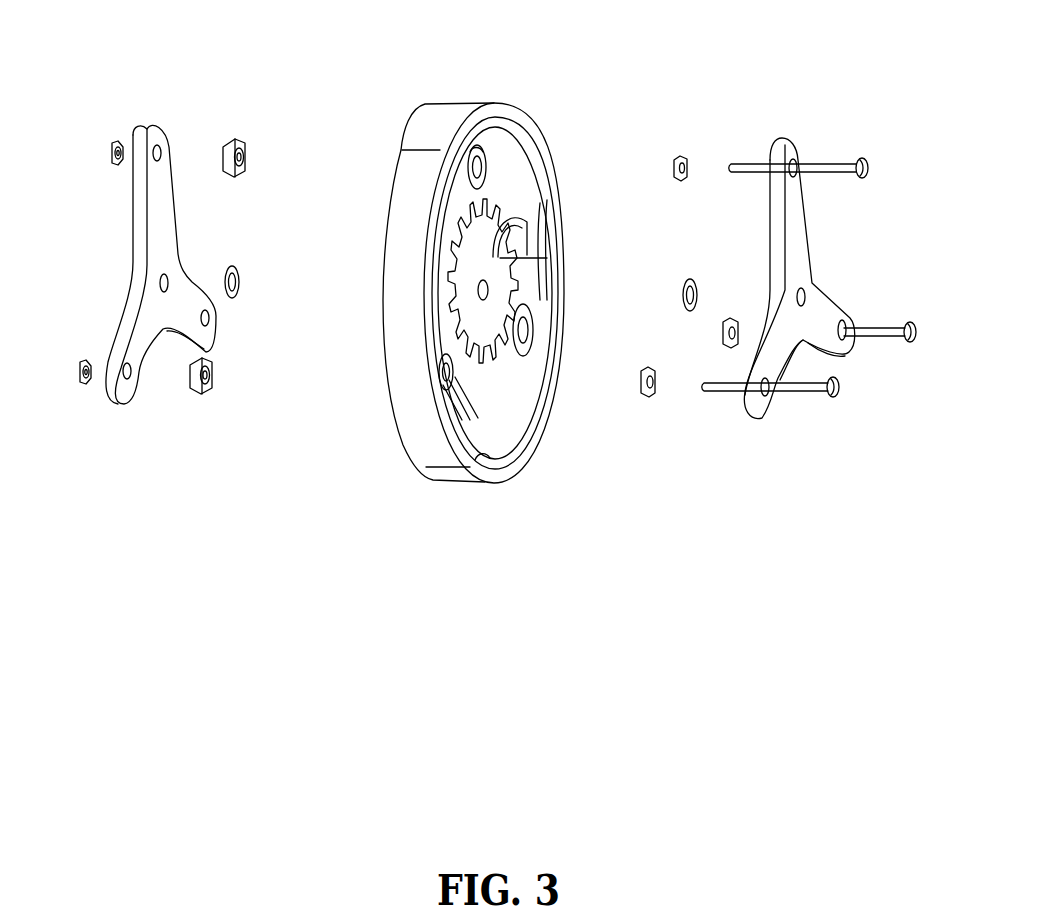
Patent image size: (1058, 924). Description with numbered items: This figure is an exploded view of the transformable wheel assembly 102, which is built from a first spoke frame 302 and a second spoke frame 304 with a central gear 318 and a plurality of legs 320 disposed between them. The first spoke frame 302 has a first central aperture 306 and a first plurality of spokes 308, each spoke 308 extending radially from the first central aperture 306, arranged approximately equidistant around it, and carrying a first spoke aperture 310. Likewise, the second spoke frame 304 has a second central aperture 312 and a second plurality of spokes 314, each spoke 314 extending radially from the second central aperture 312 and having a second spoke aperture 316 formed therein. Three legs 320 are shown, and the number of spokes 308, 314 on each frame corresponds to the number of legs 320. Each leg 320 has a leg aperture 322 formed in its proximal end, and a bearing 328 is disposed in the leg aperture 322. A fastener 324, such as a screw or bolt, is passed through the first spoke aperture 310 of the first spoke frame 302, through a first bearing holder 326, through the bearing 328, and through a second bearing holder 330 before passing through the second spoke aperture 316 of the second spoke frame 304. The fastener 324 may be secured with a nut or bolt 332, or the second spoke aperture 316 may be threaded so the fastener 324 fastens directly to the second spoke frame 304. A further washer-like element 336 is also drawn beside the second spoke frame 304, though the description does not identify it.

The transformable wheel assembly 102 is at (653, 58).
The first spoke frame 302 is at (800, 253).
The second spoke frame 304 is at (165, 228).
The first central aperture 306 is at (804, 295).
The first plurality of spokes 308 is at (797, 185).
The first spoke aperture 310 is at (796, 162).
The second central aperture 312 is at (160, 285).
The second plurality of spokes 314 is at (150, 129).
The second spoke aperture 316 is at (162, 148).
The central gear 318 is at (480, 260).
The legs 320 is at (502, 172).
The leg aperture 322 is at (478, 170).
The fastener 324 is at (866, 163).
The first bearing holder 326 is at (683, 160).
The bearing 328 is at (476, 152).
The second bearing holder 330 is at (235, 175).
The nut or bolt 332 is at (115, 144).
The washer 336 is at (234, 297).